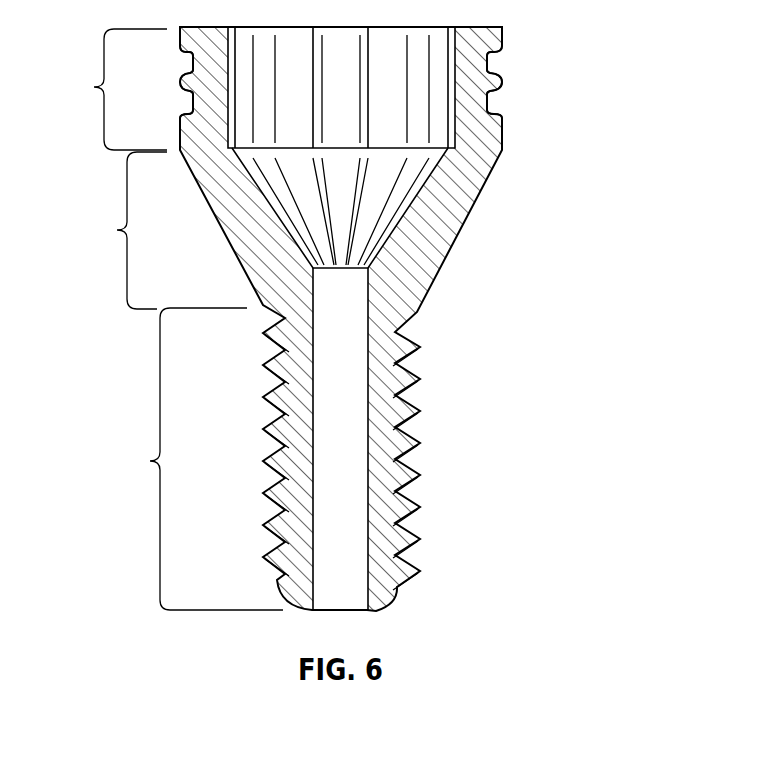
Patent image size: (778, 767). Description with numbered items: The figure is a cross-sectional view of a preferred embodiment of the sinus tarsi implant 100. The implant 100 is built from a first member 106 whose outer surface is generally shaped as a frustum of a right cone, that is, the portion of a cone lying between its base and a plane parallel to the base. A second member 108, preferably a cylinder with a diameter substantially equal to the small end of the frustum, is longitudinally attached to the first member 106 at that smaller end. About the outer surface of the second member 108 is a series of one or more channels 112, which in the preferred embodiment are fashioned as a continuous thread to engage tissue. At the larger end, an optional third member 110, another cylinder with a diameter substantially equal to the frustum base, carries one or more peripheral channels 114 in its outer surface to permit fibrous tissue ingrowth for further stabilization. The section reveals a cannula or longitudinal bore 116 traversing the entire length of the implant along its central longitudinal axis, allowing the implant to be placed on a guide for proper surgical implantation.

The implant 100 is at (482, 240).
The first member 106 is at (252, 228).
The second member 108 is at (186, 459).
The third member 110 is at (99, 89).
The channels 112 is at (398, 492).
The peripheral channels 114 is at (487, 61).
The longitudinal bore 116 is at (340, 428).